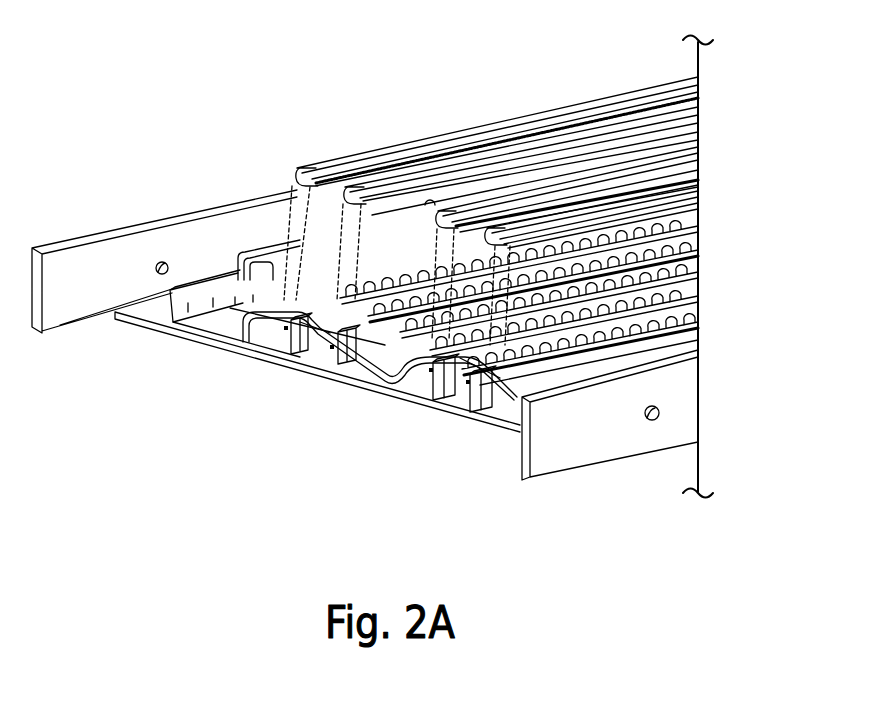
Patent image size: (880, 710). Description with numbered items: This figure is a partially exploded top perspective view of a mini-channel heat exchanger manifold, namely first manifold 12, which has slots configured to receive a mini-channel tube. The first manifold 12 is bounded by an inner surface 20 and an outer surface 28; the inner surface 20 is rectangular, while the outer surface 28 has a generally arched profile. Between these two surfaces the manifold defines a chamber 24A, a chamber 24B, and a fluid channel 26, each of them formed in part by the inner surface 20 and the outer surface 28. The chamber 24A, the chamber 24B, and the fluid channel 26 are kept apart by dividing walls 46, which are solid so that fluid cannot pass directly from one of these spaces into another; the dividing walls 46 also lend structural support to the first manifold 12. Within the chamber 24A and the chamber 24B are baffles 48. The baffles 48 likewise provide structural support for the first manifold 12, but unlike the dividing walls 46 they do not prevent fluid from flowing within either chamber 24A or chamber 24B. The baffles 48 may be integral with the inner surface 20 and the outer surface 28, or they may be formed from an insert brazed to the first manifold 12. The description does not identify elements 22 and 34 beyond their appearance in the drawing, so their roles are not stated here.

The first manifold 12 is at (250, 127).
The inner surface 20 is at (120, 322).
The side guide panel 22 is at (140, 222).
The chamber 24A is at (325, 361).
The chamber 24B is at (477, 410).
The fluid channel 26 is at (177, 330).
The outer surface 28 is at (264, 250).
The rail 34 is at (502, 158).
The dividing walls 46 is at (125, 350).
The baffles 48 is at (308, 350).